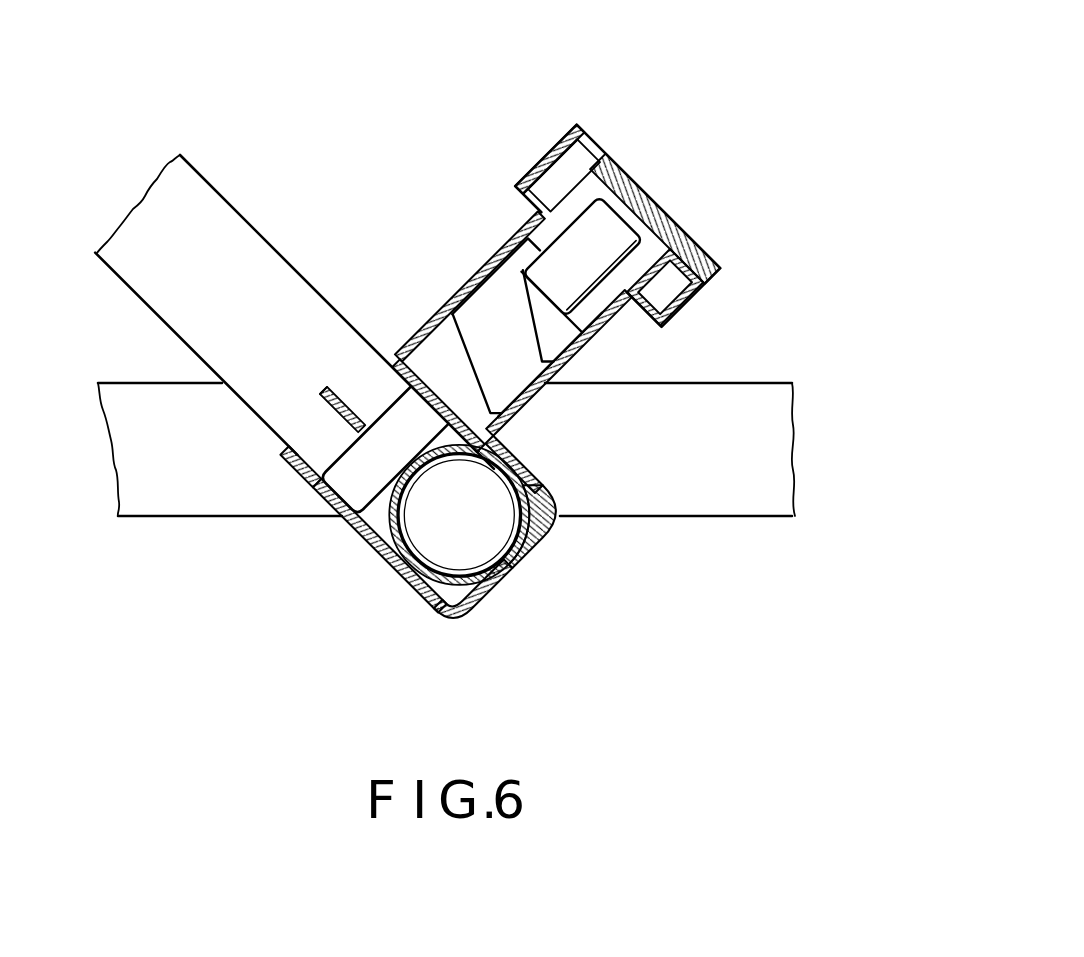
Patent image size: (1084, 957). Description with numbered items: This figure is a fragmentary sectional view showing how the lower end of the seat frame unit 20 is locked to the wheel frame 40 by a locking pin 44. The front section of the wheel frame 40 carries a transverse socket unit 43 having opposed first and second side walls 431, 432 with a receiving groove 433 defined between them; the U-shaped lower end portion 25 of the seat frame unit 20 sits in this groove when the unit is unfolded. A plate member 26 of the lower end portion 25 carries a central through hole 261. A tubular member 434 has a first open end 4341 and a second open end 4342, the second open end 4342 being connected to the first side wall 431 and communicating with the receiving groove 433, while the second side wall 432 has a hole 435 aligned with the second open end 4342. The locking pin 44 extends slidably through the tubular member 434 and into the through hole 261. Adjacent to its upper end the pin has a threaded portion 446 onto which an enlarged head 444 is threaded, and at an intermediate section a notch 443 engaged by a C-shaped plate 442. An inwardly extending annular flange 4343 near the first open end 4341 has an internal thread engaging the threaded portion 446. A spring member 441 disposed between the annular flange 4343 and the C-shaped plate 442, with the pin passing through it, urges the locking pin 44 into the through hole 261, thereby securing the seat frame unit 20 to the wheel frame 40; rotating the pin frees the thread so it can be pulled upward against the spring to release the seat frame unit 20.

The seat frame unit 20 is at (198, 166).
The U-shaped lower end portion 25 is at (533, 547).
The plate member 26 is at (327, 392).
The central through hole 261 is at (362, 400).
The wheel frame 40 is at (741, 519).
The socket unit 43 is at (407, 587).
The first side wall 431 is at (540, 470).
The second side wall 432 is at (433, 610).
The receiving groove 433 is at (460, 590).
The tubular member 434 is at (480, 270).
The first open end 4341 is at (655, 325).
The second open end 4342 is at (396, 360).
The annular flange 4343 is at (540, 228).
The hole 435 is at (312, 478).
The locking pin 44 is at (662, 199).
The spring member 441 is at (567, 350).
The C-shaped plate 442 is at (467, 413).
The notch 443 is at (437, 393).
The enlarged head 444 is at (614, 172).
The threaded portion 446 is at (577, 124).